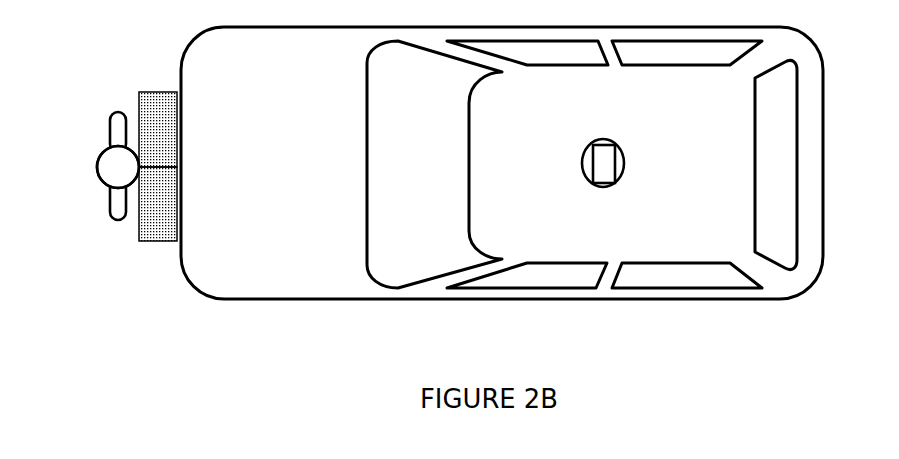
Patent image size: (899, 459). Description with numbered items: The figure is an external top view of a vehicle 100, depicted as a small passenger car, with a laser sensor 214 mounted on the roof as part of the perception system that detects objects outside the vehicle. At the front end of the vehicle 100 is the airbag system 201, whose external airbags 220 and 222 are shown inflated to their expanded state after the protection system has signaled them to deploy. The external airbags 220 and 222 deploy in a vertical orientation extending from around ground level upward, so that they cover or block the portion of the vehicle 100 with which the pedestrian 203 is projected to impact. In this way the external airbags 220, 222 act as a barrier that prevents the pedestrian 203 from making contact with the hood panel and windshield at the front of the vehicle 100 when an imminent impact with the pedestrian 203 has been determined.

The vehicle 100 is at (527, 302).
The laser sensor 214 is at (618, 185).
The airbag system 201 is at (117, 152).
The pedestrian 203 is at (97, 167).
The external airbag 222 is at (152, 92).
The external airbag 220 is at (158, 241).